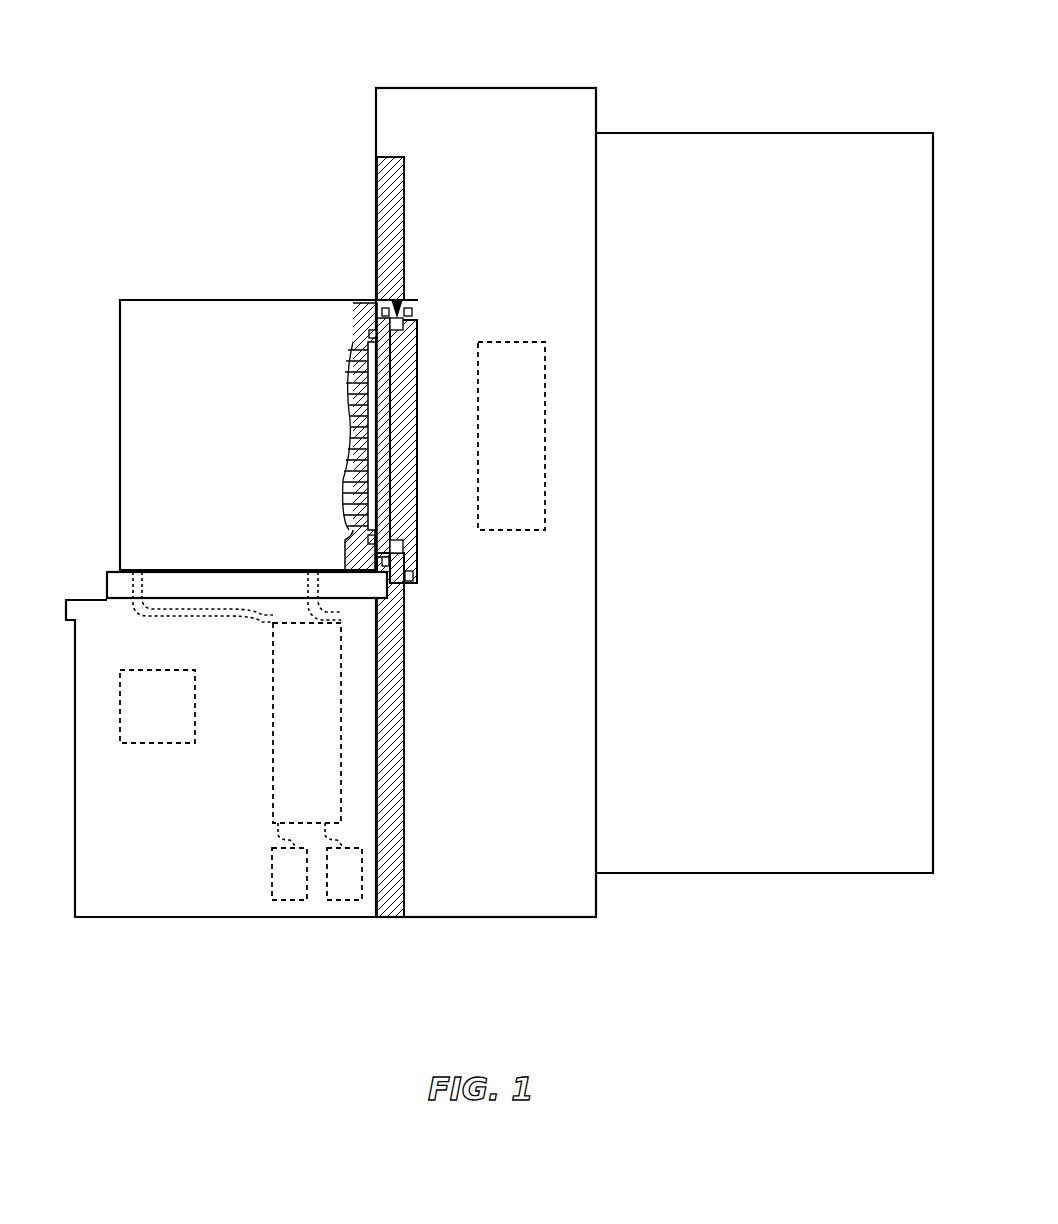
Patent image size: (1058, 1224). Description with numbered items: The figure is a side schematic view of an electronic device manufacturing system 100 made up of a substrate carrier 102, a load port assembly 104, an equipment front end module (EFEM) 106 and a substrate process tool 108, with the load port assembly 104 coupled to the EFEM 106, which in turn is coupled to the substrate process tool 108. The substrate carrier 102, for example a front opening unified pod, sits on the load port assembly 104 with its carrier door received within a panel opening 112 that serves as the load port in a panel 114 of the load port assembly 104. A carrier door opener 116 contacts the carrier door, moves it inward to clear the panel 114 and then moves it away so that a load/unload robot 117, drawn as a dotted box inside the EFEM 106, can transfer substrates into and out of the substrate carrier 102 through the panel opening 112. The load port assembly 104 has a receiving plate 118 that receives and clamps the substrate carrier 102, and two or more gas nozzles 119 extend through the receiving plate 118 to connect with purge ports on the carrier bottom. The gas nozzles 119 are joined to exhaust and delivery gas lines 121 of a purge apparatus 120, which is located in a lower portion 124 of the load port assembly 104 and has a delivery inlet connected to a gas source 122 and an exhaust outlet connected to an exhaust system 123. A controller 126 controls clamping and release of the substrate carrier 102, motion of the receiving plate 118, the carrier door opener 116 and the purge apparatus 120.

The electronic device manufacturing system 100 is at (190, 70).
The substrate carrier 102 is at (200, 292).
The load port assembly 104 is at (183, 925).
The equipment front end module (EFEM) 106 is at (483, 88).
The substrate process tool 108 is at (760, 133).
The panel opening 112 is at (393, 298).
The panel 114 is at (405, 222).
The carrier door opener 116 is at (418, 440).
The load/unload robot 117 is at (510, 342).
The receiving plate 118 is at (107, 585).
The gas nozzles 119 is at (148, 585).
The purge apparatus 120 is at (272, 735).
The exhaust and delivery gas lines 121 is at (160, 630).
The gas source 122 is at (285, 900).
The exhaust system 123 is at (338, 900).
The lower portion 124 is at (362, 732).
The controller 126 is at (160, 745).